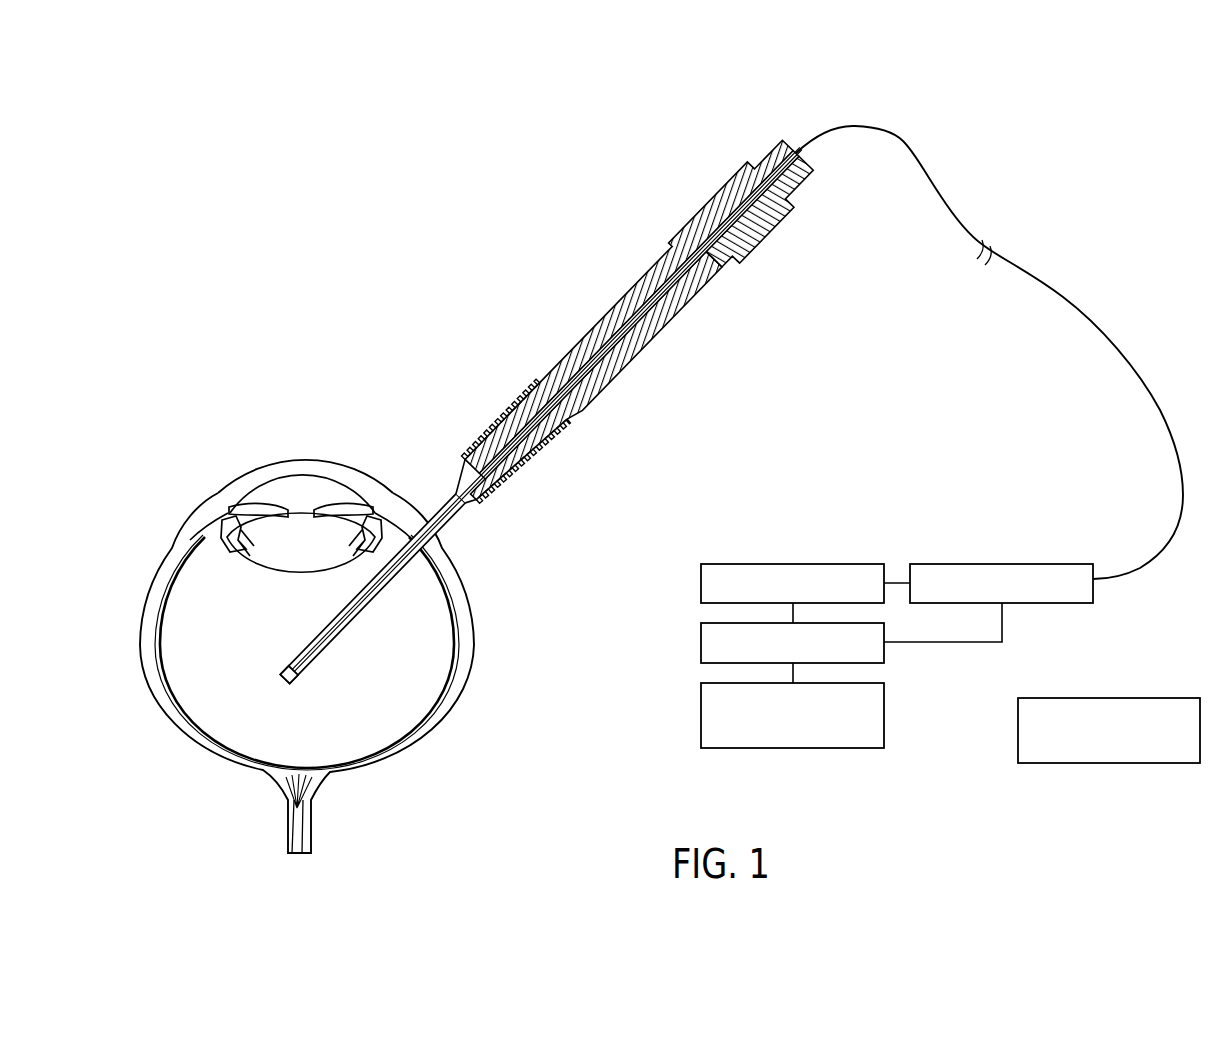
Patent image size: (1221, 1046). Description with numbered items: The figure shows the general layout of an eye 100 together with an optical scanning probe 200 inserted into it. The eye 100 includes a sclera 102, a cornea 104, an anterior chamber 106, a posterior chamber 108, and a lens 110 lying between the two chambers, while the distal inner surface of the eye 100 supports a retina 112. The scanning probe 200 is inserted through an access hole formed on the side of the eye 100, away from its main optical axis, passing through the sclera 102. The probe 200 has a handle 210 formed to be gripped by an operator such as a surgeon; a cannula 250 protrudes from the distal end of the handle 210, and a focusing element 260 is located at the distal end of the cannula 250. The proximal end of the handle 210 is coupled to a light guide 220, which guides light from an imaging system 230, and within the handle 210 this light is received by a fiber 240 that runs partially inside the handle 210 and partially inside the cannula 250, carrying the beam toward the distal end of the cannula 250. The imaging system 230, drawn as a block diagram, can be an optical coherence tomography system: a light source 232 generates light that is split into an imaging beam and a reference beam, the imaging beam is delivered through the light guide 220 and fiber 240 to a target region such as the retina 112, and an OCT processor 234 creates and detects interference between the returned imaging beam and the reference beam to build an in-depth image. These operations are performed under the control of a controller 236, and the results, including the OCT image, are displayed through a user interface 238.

The eye 100 is at (307, 621).
The sclera 102 is at (222, 770).
The cornea 104 is at (330, 462).
The anterior chamber 106 is at (338, 498).
The posterior chamber 108 is at (314, 610).
The lens 110 is at (277, 567).
The retina 112 is at (210, 742).
The optical scanning probe 200 is at (497, 423).
The handle 210 is at (592, 441).
The light guide 220 is at (1053, 286).
The imaging system 230 is at (911, 643).
The light source 232 is at (701, 583).
The OCT processor 234 is at (1019, 563).
The controller 236 is at (701, 645).
The user interface 238 is at (701, 712).
The fiber 240 is at (680, 253).
The cannula 250 is at (371, 607).
The focusing element 260 is at (279, 681).